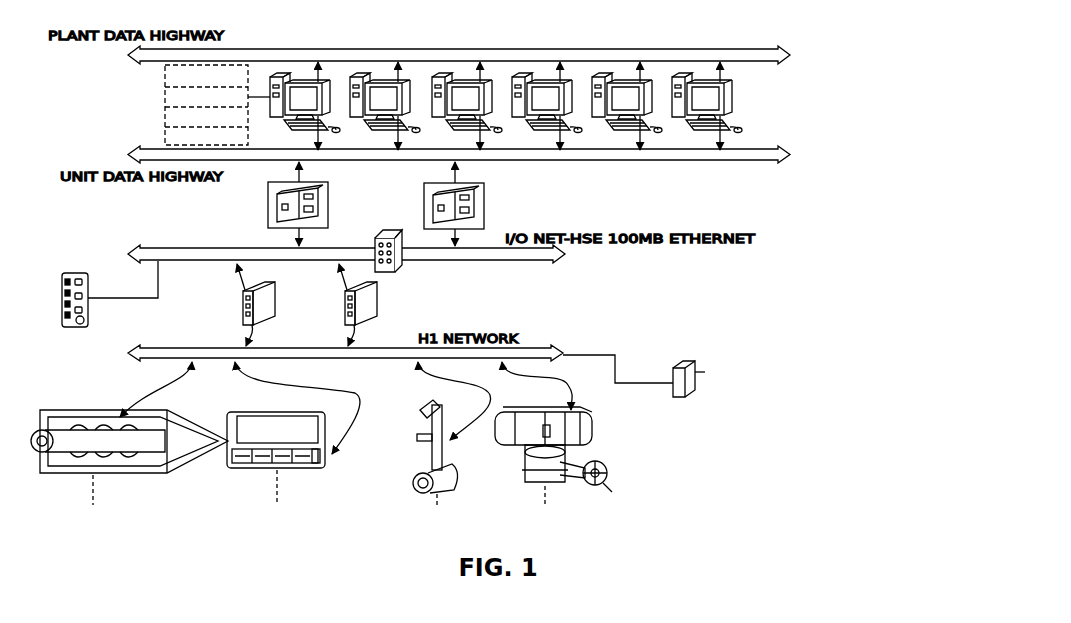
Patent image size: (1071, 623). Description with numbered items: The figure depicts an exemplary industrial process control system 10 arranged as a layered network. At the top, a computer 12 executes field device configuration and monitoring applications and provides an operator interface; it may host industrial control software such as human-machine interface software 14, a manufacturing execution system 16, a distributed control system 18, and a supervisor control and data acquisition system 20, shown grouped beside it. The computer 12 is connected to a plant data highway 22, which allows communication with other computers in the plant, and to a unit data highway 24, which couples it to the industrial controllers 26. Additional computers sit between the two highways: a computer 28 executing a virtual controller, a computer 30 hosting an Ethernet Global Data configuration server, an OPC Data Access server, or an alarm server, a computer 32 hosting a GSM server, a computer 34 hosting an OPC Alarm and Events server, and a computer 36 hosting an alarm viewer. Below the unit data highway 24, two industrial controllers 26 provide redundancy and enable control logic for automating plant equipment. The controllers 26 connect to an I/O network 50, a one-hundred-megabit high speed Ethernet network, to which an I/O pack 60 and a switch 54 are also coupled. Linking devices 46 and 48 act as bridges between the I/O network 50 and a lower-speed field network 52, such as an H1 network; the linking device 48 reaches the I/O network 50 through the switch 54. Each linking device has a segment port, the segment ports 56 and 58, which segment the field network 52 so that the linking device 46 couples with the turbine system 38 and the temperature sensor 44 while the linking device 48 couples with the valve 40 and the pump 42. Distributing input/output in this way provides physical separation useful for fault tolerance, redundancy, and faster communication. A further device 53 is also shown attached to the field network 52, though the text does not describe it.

The industrial process control system 10 is at (886, 51).
The computer 12 is at (283, 77).
The human-machine interface (HMI) software 14 is at (165, 80).
The manufacturing execution system (MES) 16 is at (165, 100).
The distributed control system (DCS) 18 is at (165, 120).
The supervisor control and data acquisition (SCADA) system 20 is at (165, 140).
The plant data highway 22 is at (790, 51).
The unit data highway 24 is at (790, 151).
The industrial controller 26 is at (329, 205).
The computer 28 is at (363, 77).
The computer 30 is at (445, 77).
The computer 32 is at (525, 77).
The computer 34 is at (605, 77).
The computer 36 is at (685, 77).
The turbine system 38 is at (150, 480).
The valve 40 is at (446, 490).
The pump 42 is at (610, 480).
The temperature sensor 44 is at (294, 468).
The linking device 46 is at (275, 299).
The linking device 48 is at (377, 299).
The I/O network 50 is at (567, 257).
The field network 52 is at (567, 351).
The field device 53 is at (681, 367).
The switch 54 is at (402, 268).
The segment port 56 is at (239, 327).
The segment port 58 is at (341, 327).
The I/O pack 60 is at (74, 273).